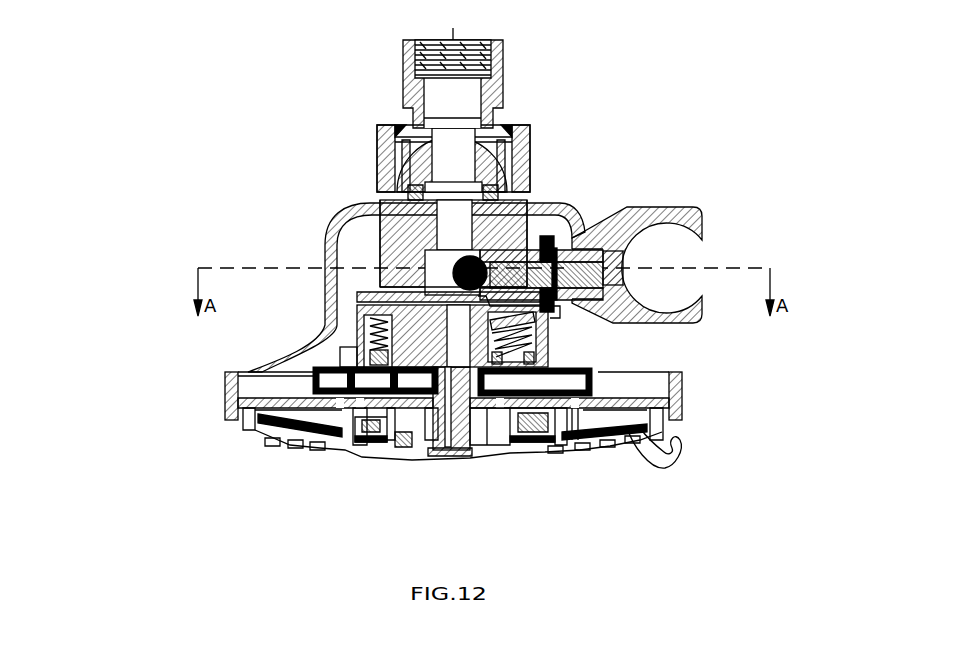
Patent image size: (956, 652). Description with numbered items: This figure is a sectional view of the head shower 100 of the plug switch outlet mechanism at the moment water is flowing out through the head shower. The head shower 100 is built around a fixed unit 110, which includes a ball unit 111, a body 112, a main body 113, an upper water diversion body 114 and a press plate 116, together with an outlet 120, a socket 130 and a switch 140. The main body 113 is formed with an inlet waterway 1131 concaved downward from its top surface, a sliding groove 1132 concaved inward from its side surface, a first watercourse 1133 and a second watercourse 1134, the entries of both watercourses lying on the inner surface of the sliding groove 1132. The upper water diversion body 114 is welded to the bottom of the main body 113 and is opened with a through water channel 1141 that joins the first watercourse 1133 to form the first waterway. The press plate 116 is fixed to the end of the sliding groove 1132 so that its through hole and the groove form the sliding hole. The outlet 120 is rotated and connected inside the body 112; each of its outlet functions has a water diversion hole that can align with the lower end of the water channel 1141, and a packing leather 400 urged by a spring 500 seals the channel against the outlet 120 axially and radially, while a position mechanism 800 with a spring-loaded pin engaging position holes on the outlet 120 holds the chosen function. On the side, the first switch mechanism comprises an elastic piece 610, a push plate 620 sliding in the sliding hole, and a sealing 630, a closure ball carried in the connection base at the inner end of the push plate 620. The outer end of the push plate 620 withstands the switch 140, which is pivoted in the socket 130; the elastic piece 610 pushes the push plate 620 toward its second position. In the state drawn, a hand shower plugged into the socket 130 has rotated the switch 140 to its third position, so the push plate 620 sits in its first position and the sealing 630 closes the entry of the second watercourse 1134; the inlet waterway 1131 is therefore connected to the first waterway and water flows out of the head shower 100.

The head shower 100 is at (180, 100).
The fixed unit 110 is at (250, 262).
The ball unit 111 is at (406, 98).
The body 112 is at (225, 375).
The main body 113 is at (383, 212).
The upper water diversion body 114 is at (360, 310).
The press plate 116 is at (577, 227).
The outlet 120 is at (272, 442).
The socket 130 is at (667, 215).
The switch 140 is at (627, 258).
The packing leather 400 is at (535, 372).
The spring 500 is at (430, 452).
The elastic piece 610 is at (622, 220).
The push plate 620 is at (625, 292).
The sealing 630 is at (481, 258).
The position mechanism 800 is at (330, 353).
The inlet waterway 1131 is at (370, 203).
The sliding groove 1132 is at (380, 234).
The first watercourse 1133 is at (552, 300).
The second watercourse 1134 is at (357, 286).
The water channel 1141 is at (532, 330).